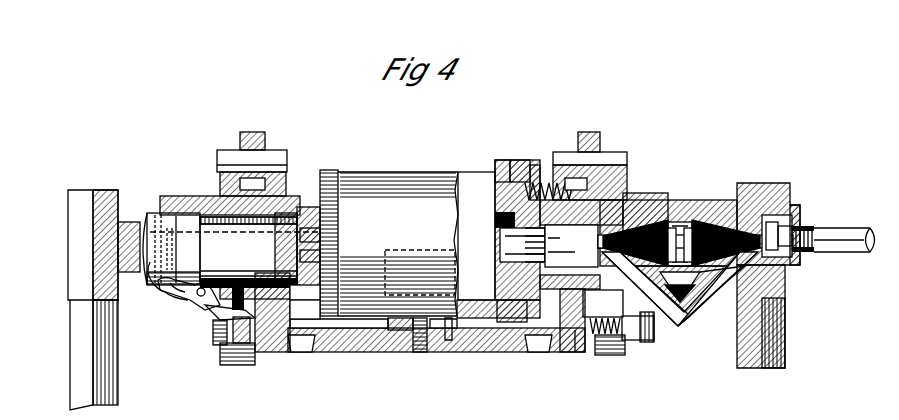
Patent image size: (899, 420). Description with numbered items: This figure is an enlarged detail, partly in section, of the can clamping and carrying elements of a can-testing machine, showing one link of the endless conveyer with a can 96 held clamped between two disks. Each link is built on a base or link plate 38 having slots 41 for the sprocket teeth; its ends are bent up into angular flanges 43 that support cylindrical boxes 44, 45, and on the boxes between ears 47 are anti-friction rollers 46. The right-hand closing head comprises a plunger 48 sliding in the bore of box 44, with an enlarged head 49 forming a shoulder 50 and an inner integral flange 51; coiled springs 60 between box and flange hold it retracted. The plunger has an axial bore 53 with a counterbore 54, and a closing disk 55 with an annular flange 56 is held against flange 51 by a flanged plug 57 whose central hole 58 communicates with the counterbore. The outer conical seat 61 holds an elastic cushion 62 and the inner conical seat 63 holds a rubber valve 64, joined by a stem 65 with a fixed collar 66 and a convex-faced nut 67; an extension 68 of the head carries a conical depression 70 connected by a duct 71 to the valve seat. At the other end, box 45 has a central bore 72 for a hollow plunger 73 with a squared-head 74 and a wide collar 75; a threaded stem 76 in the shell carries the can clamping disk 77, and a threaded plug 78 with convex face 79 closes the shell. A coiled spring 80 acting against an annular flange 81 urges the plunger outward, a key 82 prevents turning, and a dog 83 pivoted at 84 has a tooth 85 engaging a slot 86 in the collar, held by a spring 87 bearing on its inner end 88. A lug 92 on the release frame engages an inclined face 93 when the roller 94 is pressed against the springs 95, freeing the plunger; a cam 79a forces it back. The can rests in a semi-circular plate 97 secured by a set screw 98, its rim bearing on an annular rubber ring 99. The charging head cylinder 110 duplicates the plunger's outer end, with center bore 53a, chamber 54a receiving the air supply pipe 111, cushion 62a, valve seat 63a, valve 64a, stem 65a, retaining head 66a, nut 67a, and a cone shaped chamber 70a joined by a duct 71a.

The base or link plate 38 is at (506, 352).
The slots 41 is at (297, 352).
The angular flanges 43 is at (570, 392).
The cylindrical box 44 is at (620, 200).
The cylindrical box 45 is at (232, 195).
The anti-friction rollers 46 is at (253, 132).
The ears 47 is at (228, 150).
The plunger 48 is at (540, 268).
The enlarged head 49 is at (660, 200).
The shoulder 50 is at (628, 212).
The integral flange 51 is at (535, 175).
The axial bore 53 is at (644, 196).
The center bore 53a is at (745, 210).
The counterbore 54 is at (538, 262).
The chamber 54a is at (797, 266).
The closing disk 55 is at (520, 160).
The annular ledge or flange 56 is at (507, 160).
The flanged plug 57 is at (522, 232).
The central hole 58 is at (522, 246).
The coiled springs 60 is at (540, 183).
The outer conical seat 61 is at (676, 215).
The elastic plug or cushion 62 is at (665, 235).
The rubber cushion 62a is at (704, 240).
The inner conical seat 63 is at (571, 246).
The valve seat 63a is at (773, 225).
The conical valve 64 is at (584, 352).
The rubber valve 64a is at (788, 300).
The stem 65 is at (680, 322).
The valve stem 65a is at (784, 246).
The fixed collar or head 66 is at (582, 257).
The cushion retaining head 66a is at (796, 252).
The nut 67 is at (686, 232).
The nut 67a is at (706, 232).
The extension 68 is at (670, 342).
The conical depression 70 is at (684, 304).
The cone shaped chamber 70a is at (708, 292).
The duct 71 is at (655, 292).
The duct 71a is at (784, 325).
The central bore 72 is at (212, 266).
The plunger 73 is at (291, 249).
The squared-head 74 is at (322, 239).
The wide collar 75 is at (185, 238).
The threaded stem 76 is at (318, 257).
The can clamping disk 77 is at (330, 170).
The threaded plug 78 is at (150, 270).
The convex end face 79 is at (160, 232).
The cam 79a is at (118, 245).
The coiled spring 80 is at (213, 214).
The annular flange 81 is at (287, 312).
The key 82 is at (178, 225).
The latch or dog 83 is at (182, 302).
The pivot 84 is at (200, 300).
The projection or tooth 85 is at (176, 286).
The longitudinal slot 86 is at (158, 284).
The spring 87 is at (230, 318).
The inner end 88 is at (242, 323).
The lug 92 is at (246, 366).
The inclined face 93 is at (228, 348).
The anti-friction roller 94 is at (640, 346).
The coiled springs 95 is at (616, 356).
The can 96 is at (402, 172).
The semi-circular plate 97 is at (400, 331).
The set screw 98 is at (422, 352).
The annular rubber ring 99 is at (497, 168).
The cylinder 110 is at (775, 240).
The air supply pipe 111 is at (871, 236).